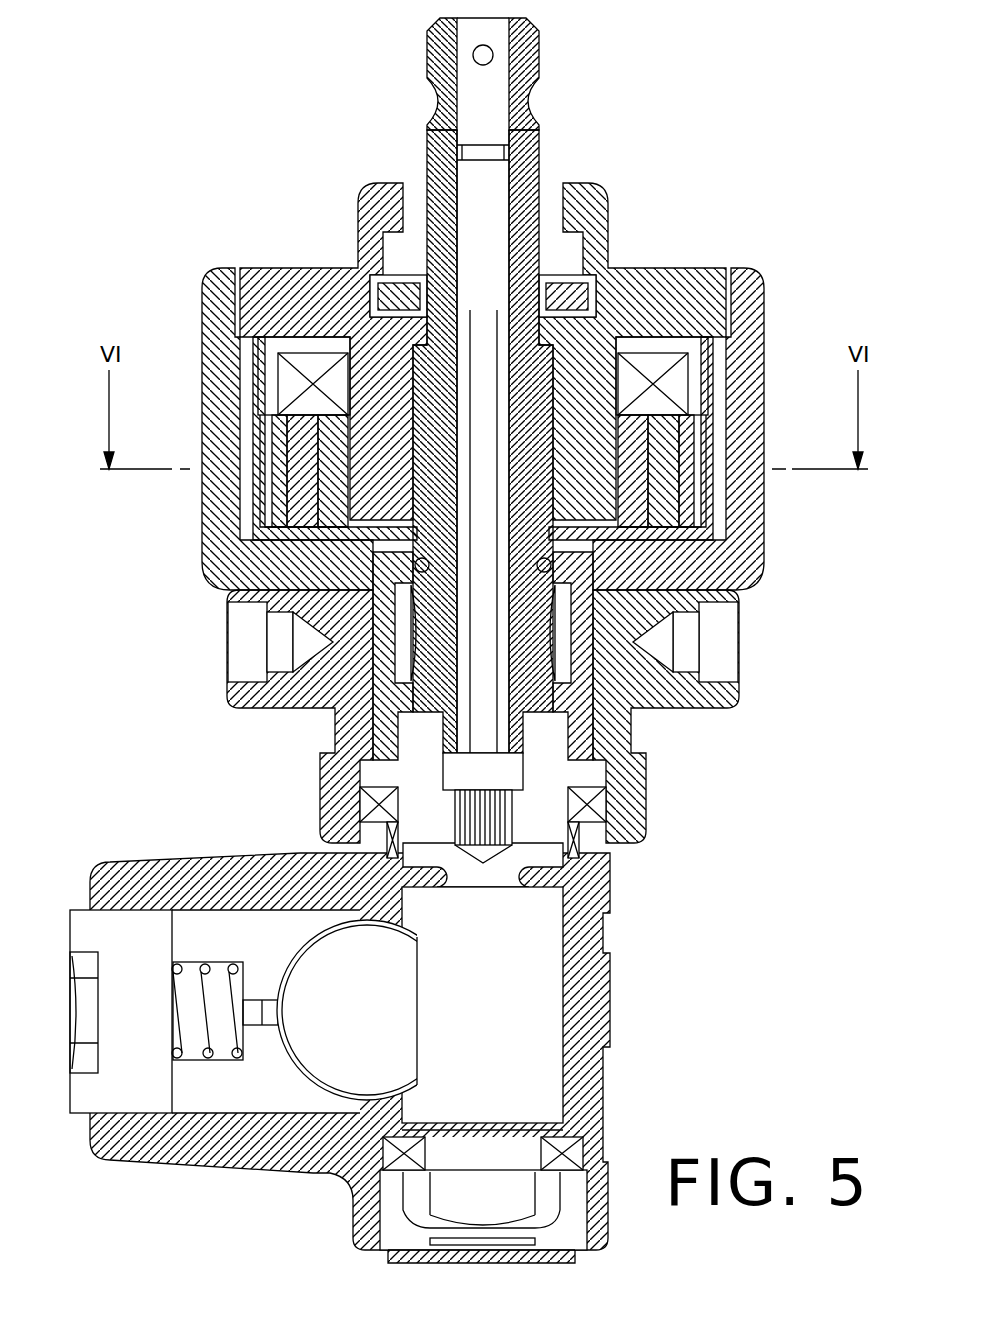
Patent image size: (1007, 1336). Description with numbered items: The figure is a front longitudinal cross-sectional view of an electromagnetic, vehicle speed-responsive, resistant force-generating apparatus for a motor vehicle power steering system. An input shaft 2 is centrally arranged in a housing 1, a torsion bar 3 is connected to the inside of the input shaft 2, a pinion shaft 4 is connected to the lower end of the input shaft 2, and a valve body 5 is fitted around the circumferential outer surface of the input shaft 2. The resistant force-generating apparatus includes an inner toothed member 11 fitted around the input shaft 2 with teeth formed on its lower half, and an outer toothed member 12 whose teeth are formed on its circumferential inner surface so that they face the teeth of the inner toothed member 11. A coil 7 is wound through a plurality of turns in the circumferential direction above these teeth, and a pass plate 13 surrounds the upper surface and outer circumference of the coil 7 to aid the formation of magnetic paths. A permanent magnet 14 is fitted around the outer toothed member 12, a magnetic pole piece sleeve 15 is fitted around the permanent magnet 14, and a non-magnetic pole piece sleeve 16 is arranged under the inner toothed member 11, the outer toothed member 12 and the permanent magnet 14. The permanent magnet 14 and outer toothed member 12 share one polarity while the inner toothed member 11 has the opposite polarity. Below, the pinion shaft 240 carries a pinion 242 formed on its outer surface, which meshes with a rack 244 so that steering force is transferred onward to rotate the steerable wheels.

The housing 1 is at (752, 268).
The input shaft 2 is at (443, 63).
The torsion bar 3 is at (473, 193).
The pinion shaft 4 is at (397, 788).
The valve body 5 is at (560, 672).
The coil 7 is at (290, 390).
The inner toothed member 11 is at (638, 458).
The outer toothed member 12 is at (667, 432).
The pass plate 13 is at (283, 350).
The permanent magnet 14 is at (707, 470).
The magnetic pole piece sleeve 15 is at (700, 500).
The non-magnetic pole piece sleeve 16 is at (673, 543).
The pinion shaft 240 is at (612, 848).
The pinion 242 is at (560, 1030).
The rack 244 is at (300, 1052).